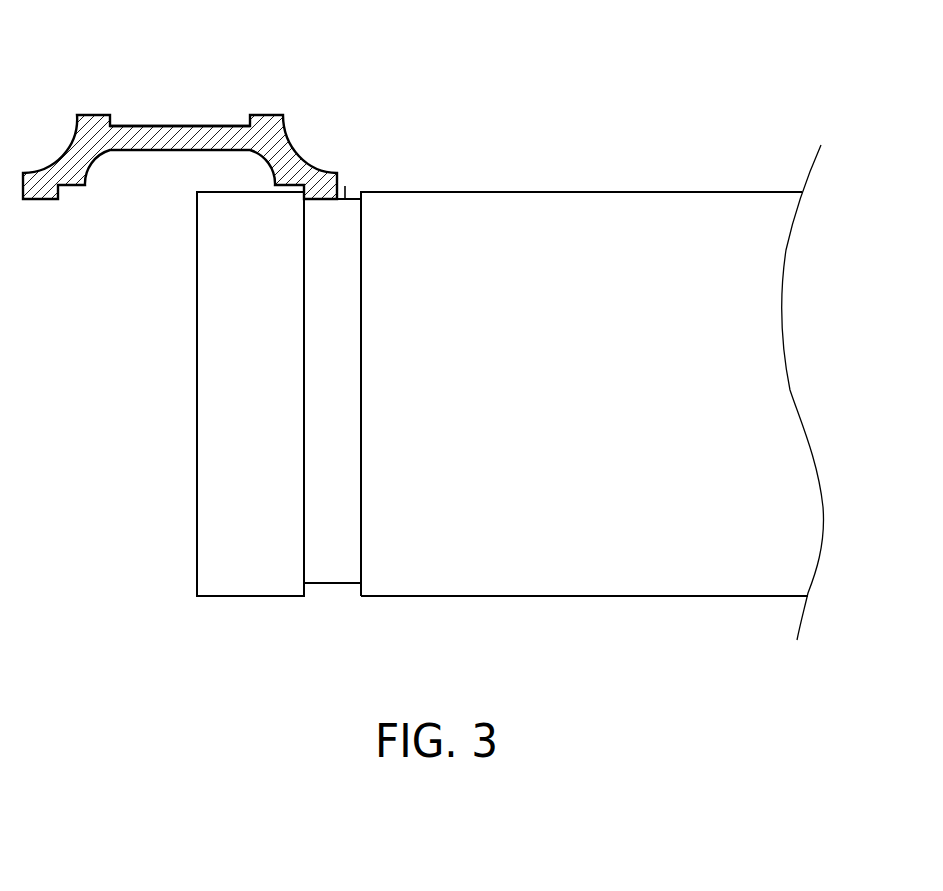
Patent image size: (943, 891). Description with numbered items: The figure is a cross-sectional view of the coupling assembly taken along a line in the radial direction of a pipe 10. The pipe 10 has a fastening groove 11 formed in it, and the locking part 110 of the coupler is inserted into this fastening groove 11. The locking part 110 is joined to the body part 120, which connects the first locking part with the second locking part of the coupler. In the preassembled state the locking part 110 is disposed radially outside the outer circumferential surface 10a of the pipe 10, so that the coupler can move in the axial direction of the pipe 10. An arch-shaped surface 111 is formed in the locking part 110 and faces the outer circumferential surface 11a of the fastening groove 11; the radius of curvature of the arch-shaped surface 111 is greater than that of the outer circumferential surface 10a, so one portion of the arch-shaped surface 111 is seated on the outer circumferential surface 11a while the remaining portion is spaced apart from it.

The pipe 10 is at (225, 457).
The outer circumferential surface 10a is at (223, 192).
The fastening groove 11 is at (361, 192).
The outer circumferential surface of the fastening groove 11a is at (351, 198).
The locking part 110 is at (301, 156).
The arch-shaped surface 111 is at (322, 198).
The body part 120 is at (153, 126).